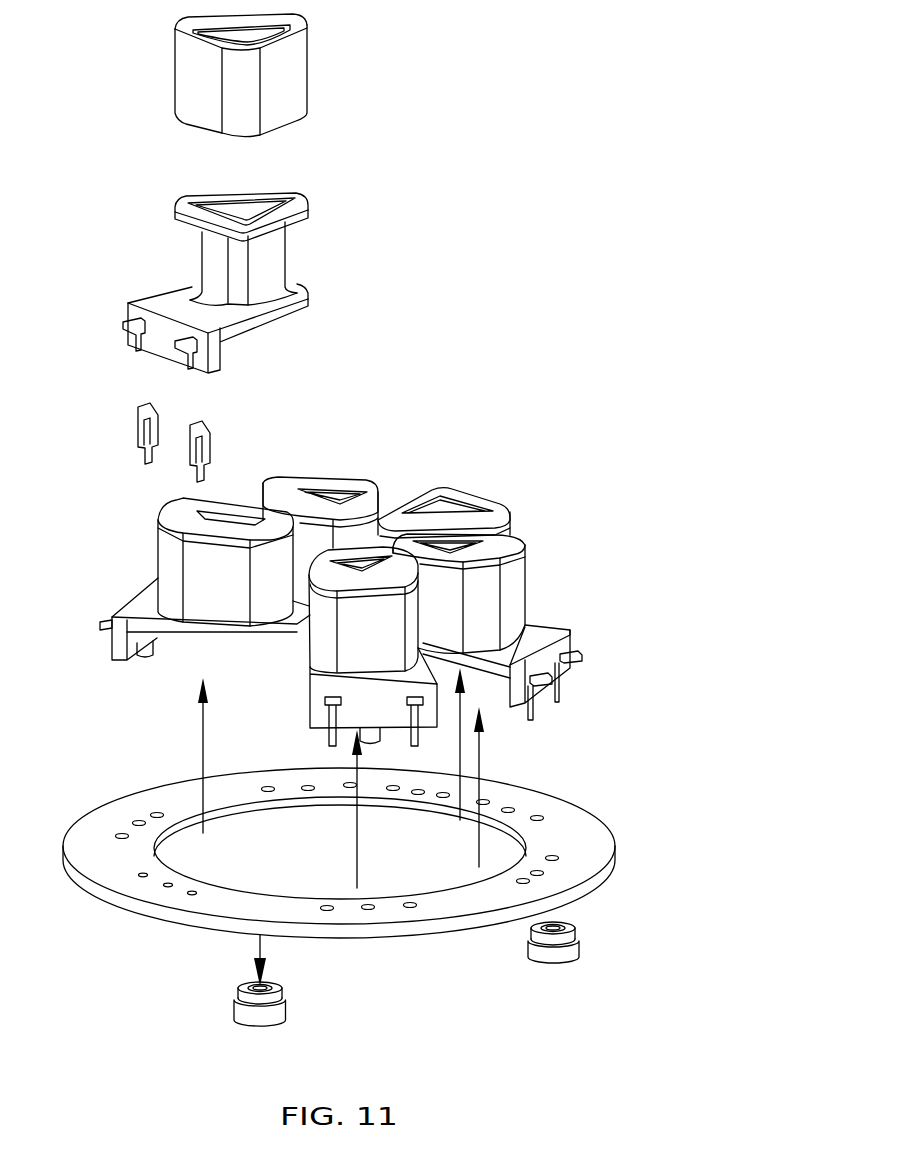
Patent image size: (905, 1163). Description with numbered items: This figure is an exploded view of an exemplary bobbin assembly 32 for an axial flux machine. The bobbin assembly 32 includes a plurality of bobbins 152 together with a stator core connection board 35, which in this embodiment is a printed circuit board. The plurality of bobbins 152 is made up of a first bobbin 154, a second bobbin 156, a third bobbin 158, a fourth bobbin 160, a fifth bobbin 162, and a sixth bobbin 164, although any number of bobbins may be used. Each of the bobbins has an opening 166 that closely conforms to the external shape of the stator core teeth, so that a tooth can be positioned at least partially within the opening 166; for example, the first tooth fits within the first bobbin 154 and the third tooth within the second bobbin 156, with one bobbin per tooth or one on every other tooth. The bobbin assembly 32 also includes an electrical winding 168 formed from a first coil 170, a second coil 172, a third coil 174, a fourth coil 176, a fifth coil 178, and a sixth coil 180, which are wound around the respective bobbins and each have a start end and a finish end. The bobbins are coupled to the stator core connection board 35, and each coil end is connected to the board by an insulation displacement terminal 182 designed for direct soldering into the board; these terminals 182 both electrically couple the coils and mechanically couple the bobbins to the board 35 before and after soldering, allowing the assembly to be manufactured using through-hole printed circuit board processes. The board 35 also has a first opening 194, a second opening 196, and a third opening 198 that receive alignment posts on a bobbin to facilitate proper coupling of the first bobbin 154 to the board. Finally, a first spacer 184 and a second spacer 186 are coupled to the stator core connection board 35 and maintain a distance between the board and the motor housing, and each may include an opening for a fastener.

The bobbin assembly 32 is at (512, 220).
The stator core connection board 35 is at (364, 861).
The plurality of bobbins 152 is at (545, 468).
The first bobbin 154 is at (247, 269).
The second bobbin 156 is at (237, 503).
The third bobbin 158 is at (340, 480).
The fourth bobbin 160 is at (485, 503).
The fifth bobbin 162 is at (542, 685).
The sixth bobbin 164 is at (306, 706).
The opening 166 is at (270, 202).
The electrical winding 168 is at (560, 716).
The first coil 170 is at (312, 69).
The second coil 172 is at (382, 497).
The third coil 174 is at (503, 576).
The fourth coil 176 is at (527, 600).
The fifth coil 178 is at (189, 607).
The sixth coil 180 is at (157, 553).
The insulation displacement terminal 182 is at (187, 470).
The first spacer 184 is at (287, 1007).
The second spacer 186 is at (580, 947).
The first opening 194 is at (143, 875).
The second opening 196 is at (168, 885).
The third opening 198 is at (192, 895).